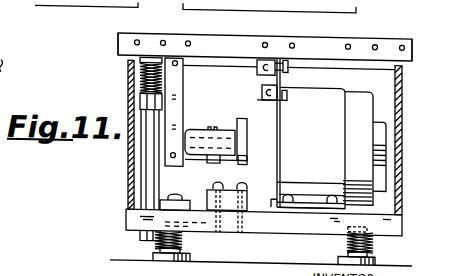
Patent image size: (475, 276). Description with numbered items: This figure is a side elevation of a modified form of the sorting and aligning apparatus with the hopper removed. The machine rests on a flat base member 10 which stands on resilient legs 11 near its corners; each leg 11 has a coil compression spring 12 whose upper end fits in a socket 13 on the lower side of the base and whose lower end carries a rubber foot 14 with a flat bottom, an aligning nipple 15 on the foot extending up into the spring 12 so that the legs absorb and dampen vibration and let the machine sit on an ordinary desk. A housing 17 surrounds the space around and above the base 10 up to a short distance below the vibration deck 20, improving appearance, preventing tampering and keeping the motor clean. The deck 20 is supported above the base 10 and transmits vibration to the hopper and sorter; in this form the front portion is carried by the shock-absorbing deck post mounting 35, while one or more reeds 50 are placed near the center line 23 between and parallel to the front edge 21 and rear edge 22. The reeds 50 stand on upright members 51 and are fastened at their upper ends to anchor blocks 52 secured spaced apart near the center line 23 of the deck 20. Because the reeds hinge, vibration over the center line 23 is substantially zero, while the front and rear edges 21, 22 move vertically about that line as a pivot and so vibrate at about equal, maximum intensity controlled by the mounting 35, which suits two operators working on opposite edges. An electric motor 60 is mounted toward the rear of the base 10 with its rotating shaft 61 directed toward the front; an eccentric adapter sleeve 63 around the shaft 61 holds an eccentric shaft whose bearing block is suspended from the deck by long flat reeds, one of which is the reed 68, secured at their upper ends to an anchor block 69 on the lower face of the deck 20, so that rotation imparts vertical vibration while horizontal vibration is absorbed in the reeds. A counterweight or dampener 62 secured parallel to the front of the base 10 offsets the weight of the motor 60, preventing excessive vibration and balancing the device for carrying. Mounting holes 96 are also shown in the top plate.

The base member 10 is at (303, 216).
The resilient legs 11 is at (195, 257).
The coil compression spring 12 is at (160, 244).
The sockets 13 is at (201, 221).
The rubber foot 14 is at (160, 262).
The aligning nipple 15 is at (177, 249).
The housing 17 is at (402, 147).
The vibration deck 20 is at (247, 26).
The front edge 21 is at (118, 42).
The rear edge 22 is at (412, 44).
The center line 23 is at (272, 49).
The shock-absorbing mounting 35 is at (128, 165).
The reeds 50 is at (288, 74).
The upright members 51 is at (270, 134).
The anchor blocks 52 is at (260, 67).
The electric motor 60 is at (305, 166).
The rotating shaft 61 is at (225, 128).
The counterweight or dampener 62 is at (177, 201).
The eccentric adapter sleeve 63 is at (208, 159).
The flat spring or reed 68 is at (175, 87).
The anchor block 69 is at (185, 64).
The mounting holes 96 is at (400, 37).